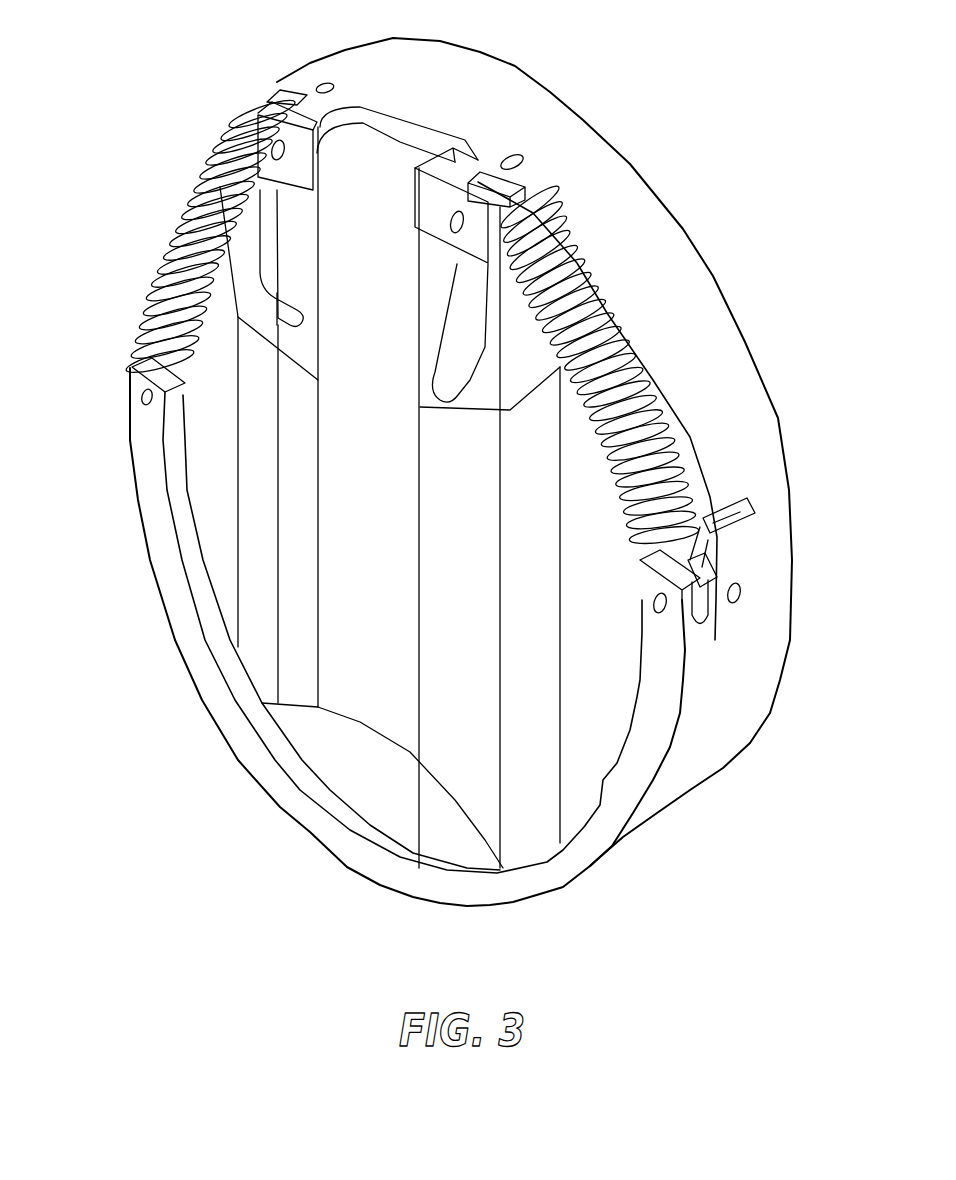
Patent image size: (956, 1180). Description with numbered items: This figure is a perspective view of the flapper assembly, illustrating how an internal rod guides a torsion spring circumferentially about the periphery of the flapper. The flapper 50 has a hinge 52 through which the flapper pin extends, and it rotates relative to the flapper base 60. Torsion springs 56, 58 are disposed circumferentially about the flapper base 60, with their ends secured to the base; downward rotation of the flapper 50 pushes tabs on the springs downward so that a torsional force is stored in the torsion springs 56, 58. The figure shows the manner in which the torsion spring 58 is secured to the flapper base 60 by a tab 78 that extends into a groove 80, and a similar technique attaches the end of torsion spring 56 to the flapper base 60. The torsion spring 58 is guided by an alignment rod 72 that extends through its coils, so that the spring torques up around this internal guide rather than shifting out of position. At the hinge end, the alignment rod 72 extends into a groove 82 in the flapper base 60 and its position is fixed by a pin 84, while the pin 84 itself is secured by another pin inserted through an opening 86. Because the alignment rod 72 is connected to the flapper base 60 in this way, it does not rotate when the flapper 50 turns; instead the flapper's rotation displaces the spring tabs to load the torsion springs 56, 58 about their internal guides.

The flapper 50 is at (474, 630).
The hinge 52 is at (351, 150).
The torsion spring 56 is at (152, 280).
The torsion spring 58 is at (620, 333).
The flapper base 60 is at (746, 700).
The alignment rod 72 is at (497, 200).
The tab 78 is at (713, 523).
The groove 80 is at (753, 500).
The groove 82 is at (478, 160).
The pin 84 is at (453, 217).
The opening 86 is at (523, 160).